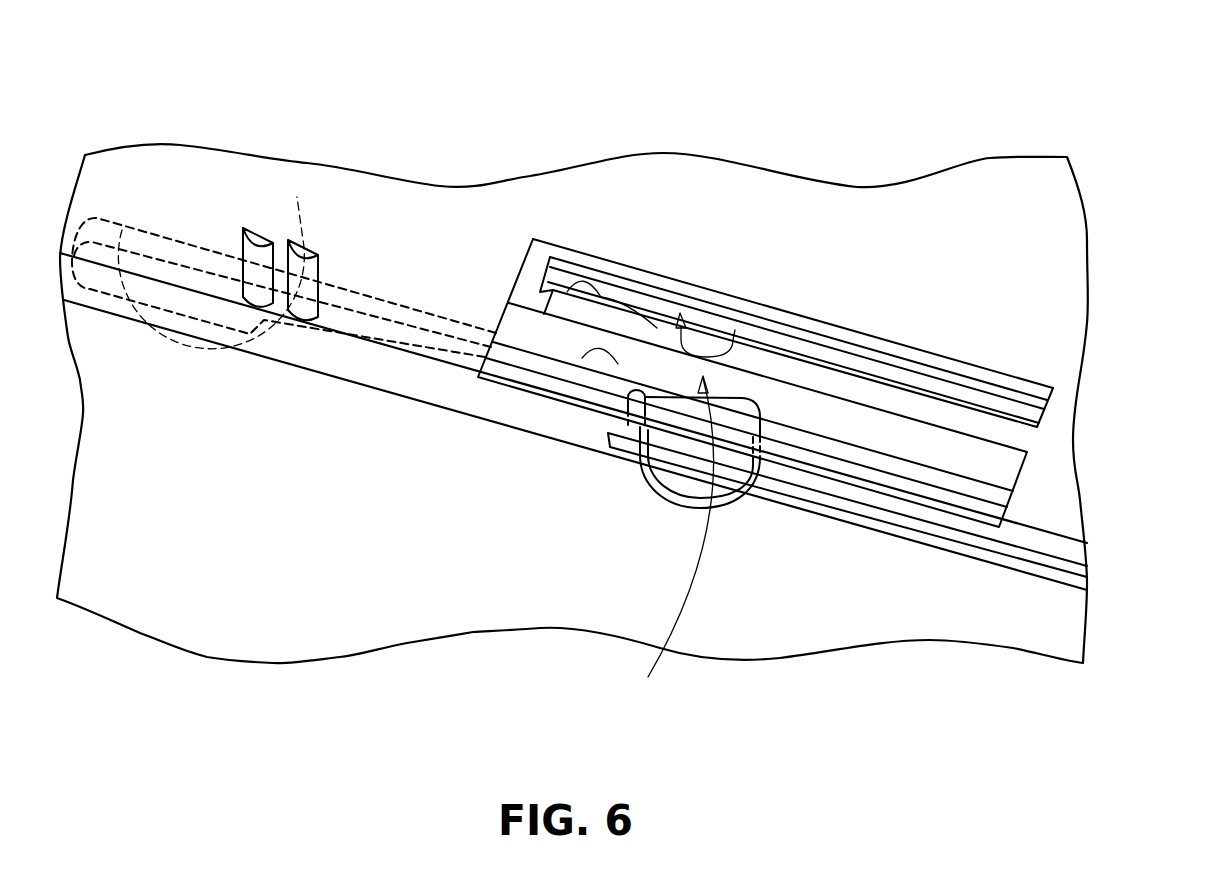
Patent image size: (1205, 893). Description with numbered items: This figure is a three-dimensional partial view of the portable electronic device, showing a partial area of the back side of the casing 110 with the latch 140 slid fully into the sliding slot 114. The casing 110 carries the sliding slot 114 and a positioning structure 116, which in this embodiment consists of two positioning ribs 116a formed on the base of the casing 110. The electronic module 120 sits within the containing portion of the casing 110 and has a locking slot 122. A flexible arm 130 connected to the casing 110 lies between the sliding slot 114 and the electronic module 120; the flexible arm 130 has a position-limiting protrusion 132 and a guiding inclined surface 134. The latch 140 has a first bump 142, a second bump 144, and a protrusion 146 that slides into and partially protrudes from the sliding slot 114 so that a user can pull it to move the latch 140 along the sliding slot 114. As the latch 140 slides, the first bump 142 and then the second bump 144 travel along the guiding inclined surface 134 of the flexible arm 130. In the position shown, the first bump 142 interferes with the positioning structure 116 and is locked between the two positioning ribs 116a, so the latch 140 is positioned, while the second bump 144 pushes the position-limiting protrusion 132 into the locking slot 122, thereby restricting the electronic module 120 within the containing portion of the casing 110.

The casing 110 is at (1013, 285).
The sliding slot 114 is at (807, 487).
The positioning structure 116 is at (228, 61).
The positioning ribs 116a is at (253, 227).
The electronic module 120 is at (1047, 417).
The locking slot 122 is at (735, 330).
The flexible arm 130 is at (887, 397).
The position-limiting protrusion 132 is at (617, 300).
The guiding inclined surface 134 is at (673, 550).
The latch 140 is at (518, 350).
The first bump 142 is at (297, 197).
The second bump 144 is at (600, 350).
The protrusion 146 is at (665, 487).